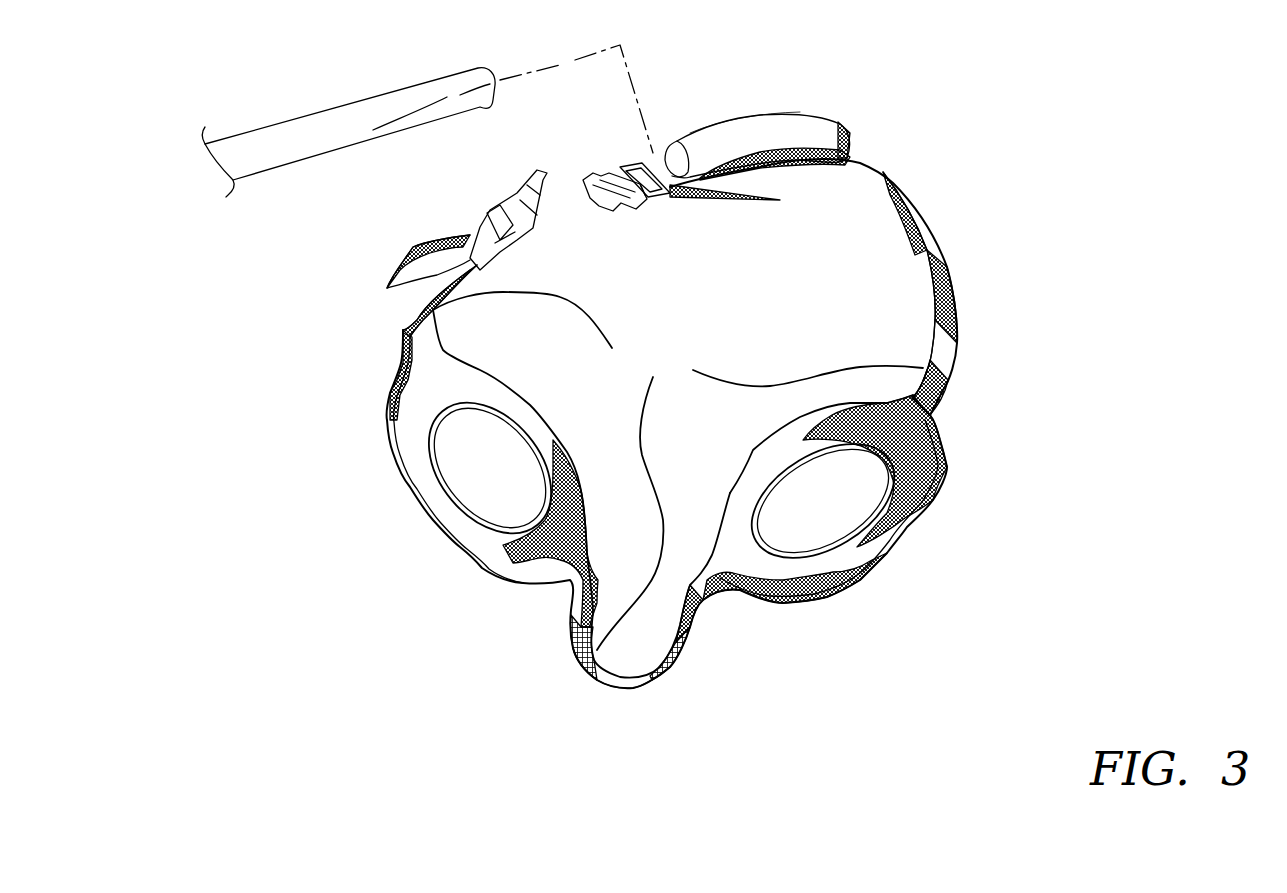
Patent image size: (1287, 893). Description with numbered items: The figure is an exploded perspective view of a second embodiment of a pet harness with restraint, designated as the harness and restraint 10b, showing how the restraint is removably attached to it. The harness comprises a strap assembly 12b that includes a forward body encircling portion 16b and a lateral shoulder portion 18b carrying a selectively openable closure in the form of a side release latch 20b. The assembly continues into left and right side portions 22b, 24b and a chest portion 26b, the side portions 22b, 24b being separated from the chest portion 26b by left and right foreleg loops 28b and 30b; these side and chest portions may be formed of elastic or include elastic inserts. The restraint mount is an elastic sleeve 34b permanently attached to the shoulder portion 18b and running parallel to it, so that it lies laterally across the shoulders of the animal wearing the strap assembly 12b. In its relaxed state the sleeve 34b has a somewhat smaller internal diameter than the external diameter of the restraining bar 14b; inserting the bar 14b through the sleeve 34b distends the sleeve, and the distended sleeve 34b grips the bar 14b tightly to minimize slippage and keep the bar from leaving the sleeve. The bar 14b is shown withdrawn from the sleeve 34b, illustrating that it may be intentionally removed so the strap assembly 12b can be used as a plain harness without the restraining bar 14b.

The harness and restraint 10b is at (254, 603).
The strap assembly 12b is at (394, 618).
The restraining bar 14b is at (333, 110).
The forward body encircling portion 16b is at (612, 348).
The lateral shoulder portion 18b is at (807, 167).
The side release latch 20b is at (623, 223).
The left side portion 22b is at (400, 333).
The right side portion 24b is at (935, 322).
The chest portion 26b is at (573, 653).
The left foreleg loop 28b is at (397, 460).
The right foreleg loop 30b is at (745, 477).
The elastic sleeve 34b is at (755, 118).